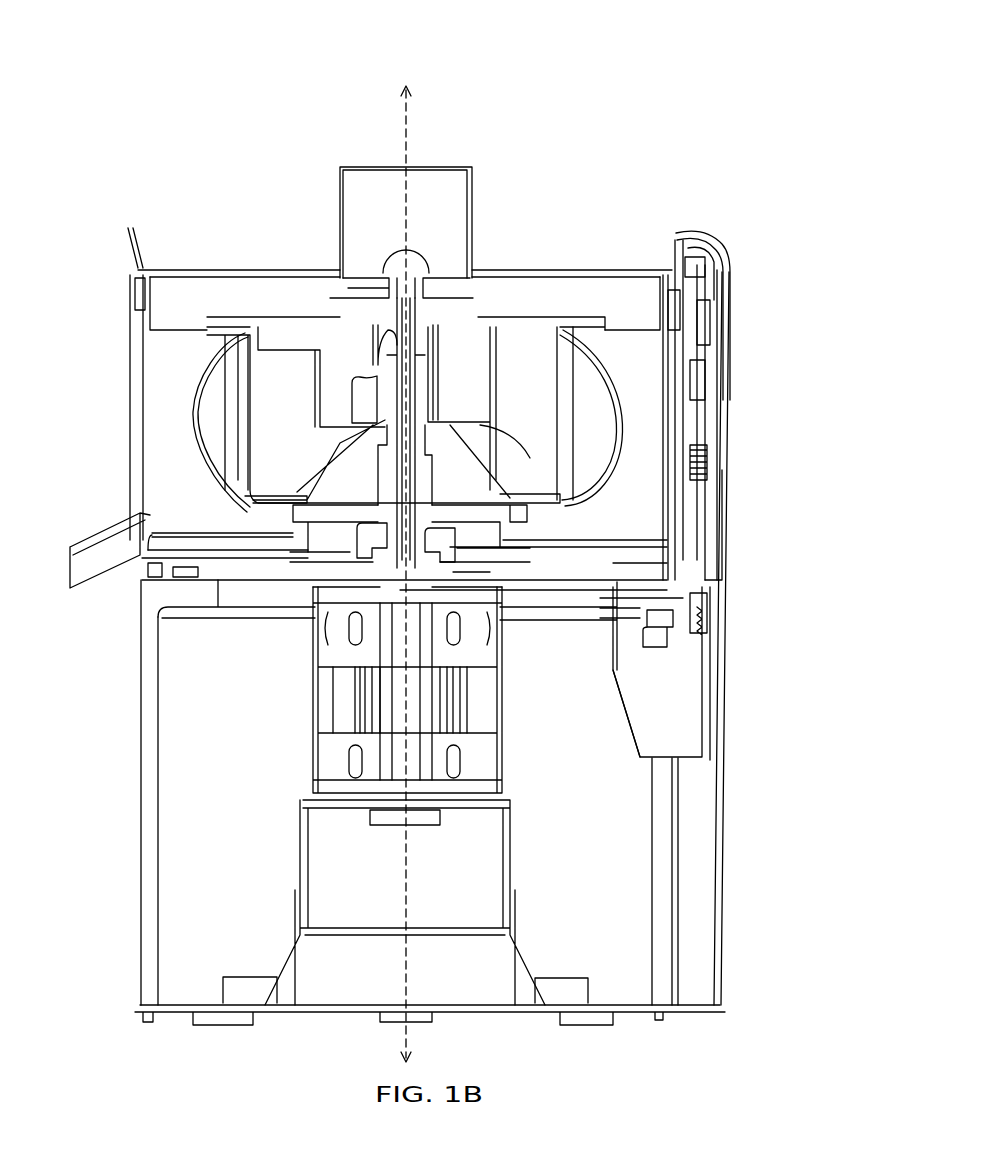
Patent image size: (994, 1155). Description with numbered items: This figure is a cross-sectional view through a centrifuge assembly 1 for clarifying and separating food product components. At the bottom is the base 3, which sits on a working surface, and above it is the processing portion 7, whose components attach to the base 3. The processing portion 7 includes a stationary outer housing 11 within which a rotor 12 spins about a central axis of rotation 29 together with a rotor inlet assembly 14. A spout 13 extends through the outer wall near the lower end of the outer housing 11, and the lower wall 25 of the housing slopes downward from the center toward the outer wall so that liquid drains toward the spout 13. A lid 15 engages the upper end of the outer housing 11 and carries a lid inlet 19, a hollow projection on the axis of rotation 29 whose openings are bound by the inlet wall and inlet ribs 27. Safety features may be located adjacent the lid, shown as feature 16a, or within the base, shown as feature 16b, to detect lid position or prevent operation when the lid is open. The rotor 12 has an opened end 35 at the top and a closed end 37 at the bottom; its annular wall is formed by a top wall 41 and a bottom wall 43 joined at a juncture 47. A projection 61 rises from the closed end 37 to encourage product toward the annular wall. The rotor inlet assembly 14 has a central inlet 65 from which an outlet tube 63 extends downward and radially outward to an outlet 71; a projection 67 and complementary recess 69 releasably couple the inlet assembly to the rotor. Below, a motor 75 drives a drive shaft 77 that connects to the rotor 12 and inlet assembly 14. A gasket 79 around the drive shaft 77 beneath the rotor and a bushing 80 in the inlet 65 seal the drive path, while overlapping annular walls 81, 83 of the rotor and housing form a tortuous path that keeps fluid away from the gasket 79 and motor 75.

The centrifuge assembly 1 is at (124, 62).
The base 3 is at (752, 772).
The processing portion 7 is at (778, 393).
The outer housing 11 is at (138, 345).
The rotor 12 is at (637, 375).
The spout 13 is at (102, 547).
The rotor inlet assembly 14 is at (273, 299).
The lid 15 is at (594, 270).
The safety feature 16a is at (731, 284).
The safety feature 16b is at (748, 630).
The lid inlet 19 is at (424, 202).
The lower wall 25 is at (230, 550).
The inlet ribs 27 is at (359, 268).
The axis of rotation 29 is at (405, 138).
The opened end 35 is at (575, 338).
The closed end 37 is at (537, 505).
The top wall 41 is at (223, 367).
The bottom wall 43 is at (225, 468).
The juncture 47 is at (200, 418).
The projection 61 is at (320, 478).
The outlet tube 63 is at (530, 443).
The central inlet 65 is at (345, 348).
The projection 67 is at (390, 383).
The recess 69 is at (435, 355).
The outlet 71 is at (587, 442).
The motor 75 is at (518, 732).
The drive shaft 77 is at (403, 695).
The gasket 79 is at (357, 540).
The bushing 80 is at (420, 330).
The annular wall 81 is at (287, 515).
The annular wall 83 is at (293, 534).